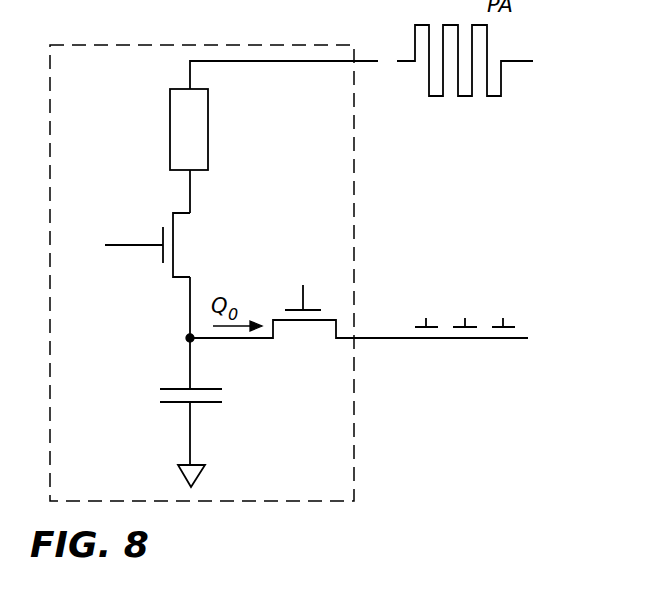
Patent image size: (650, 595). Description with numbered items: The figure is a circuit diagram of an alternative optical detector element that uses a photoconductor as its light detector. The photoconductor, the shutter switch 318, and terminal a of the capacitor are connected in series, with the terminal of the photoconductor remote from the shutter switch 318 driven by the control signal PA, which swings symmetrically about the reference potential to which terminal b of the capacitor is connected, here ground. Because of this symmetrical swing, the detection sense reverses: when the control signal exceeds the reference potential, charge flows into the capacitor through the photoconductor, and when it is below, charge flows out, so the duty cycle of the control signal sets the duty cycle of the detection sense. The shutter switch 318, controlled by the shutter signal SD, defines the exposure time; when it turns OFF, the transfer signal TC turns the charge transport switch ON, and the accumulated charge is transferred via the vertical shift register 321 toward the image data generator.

The shutter switch 318 is at (180, 278).
The vertical shift register 321 is at (515, 313).